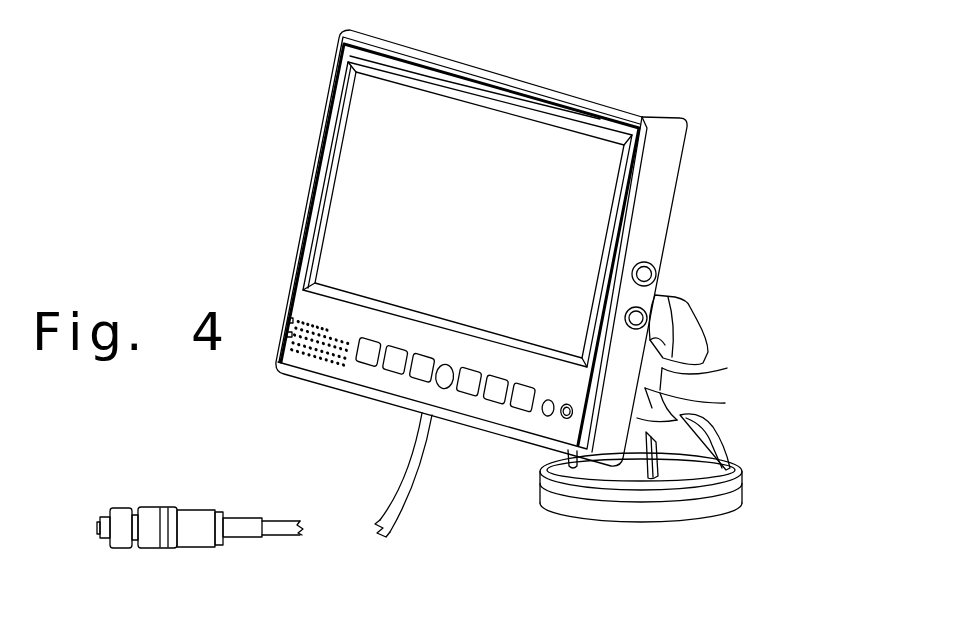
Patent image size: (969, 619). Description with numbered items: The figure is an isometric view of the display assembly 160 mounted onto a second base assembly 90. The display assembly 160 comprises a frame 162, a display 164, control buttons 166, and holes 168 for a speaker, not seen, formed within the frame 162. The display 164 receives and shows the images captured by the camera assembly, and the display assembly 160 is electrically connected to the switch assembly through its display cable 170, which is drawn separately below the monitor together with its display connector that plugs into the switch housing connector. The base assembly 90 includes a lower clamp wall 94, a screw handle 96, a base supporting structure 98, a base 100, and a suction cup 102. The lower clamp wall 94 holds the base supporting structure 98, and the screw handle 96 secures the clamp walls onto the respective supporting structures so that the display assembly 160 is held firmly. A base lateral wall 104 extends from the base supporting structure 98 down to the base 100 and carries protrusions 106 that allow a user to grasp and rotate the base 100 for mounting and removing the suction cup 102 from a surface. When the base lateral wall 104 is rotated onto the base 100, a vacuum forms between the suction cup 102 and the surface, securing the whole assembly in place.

The display assembly 160 is at (745, 88).
The frame 162 is at (517, 90).
The display 164 is at (402, 117).
The control buttons 166 is at (413, 372).
The holes 168 is at (297, 345).
The display cable 170 is at (277, 535).
The base assembly 90 is at (787, 402).
The lower clamp wall 94 is at (727, 368).
The screw handle 96 is at (673, 330).
The base supporting structure 98 is at (725, 403).
The base 100 is at (733, 474).
The suction cup 102 is at (722, 520).
The base lateral wall 104 is at (678, 463).
The protrusions 106 is at (652, 458).